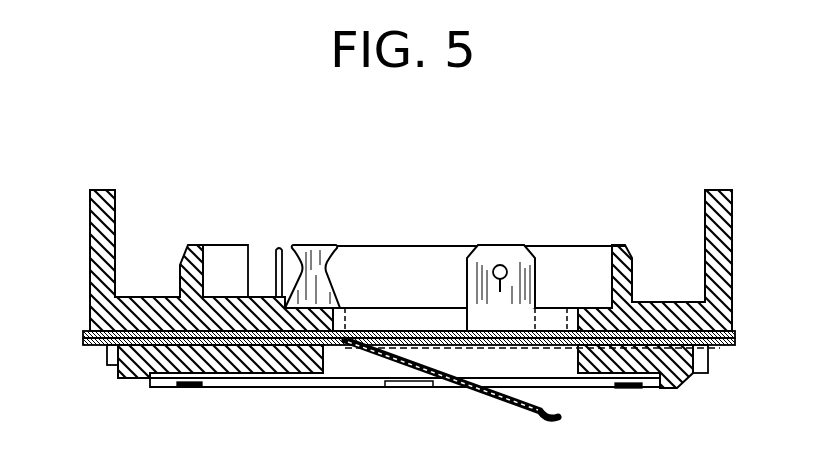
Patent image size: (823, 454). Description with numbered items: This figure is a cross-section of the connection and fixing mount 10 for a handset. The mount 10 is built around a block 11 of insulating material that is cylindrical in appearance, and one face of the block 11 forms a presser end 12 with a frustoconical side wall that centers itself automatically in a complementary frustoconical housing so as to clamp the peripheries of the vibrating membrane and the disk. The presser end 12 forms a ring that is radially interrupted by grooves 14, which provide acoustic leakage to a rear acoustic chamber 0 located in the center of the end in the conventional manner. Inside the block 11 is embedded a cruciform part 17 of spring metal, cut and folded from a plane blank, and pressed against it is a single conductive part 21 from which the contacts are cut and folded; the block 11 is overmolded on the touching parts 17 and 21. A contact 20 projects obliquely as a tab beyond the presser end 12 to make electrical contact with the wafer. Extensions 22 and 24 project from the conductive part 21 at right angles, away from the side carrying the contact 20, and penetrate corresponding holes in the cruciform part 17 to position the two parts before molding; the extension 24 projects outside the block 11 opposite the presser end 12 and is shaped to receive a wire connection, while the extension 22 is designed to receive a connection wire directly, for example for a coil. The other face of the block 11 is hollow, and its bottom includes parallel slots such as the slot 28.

The mount 10 is at (105, 172).
The block 11 is at (98, 243).
The presser end 12 is at (140, 387).
The grooves 14 is at (190, 387).
The cruciform part 17 is at (85, 332).
The contact 20 is at (517, 410).
The conductive part 21 is at (94, 351).
The extension 22 is at (312, 245).
The extension 24 is at (495, 252).
The slot 28 is at (455, 358).
The rear acoustic chamber 0 is at (303, 387).